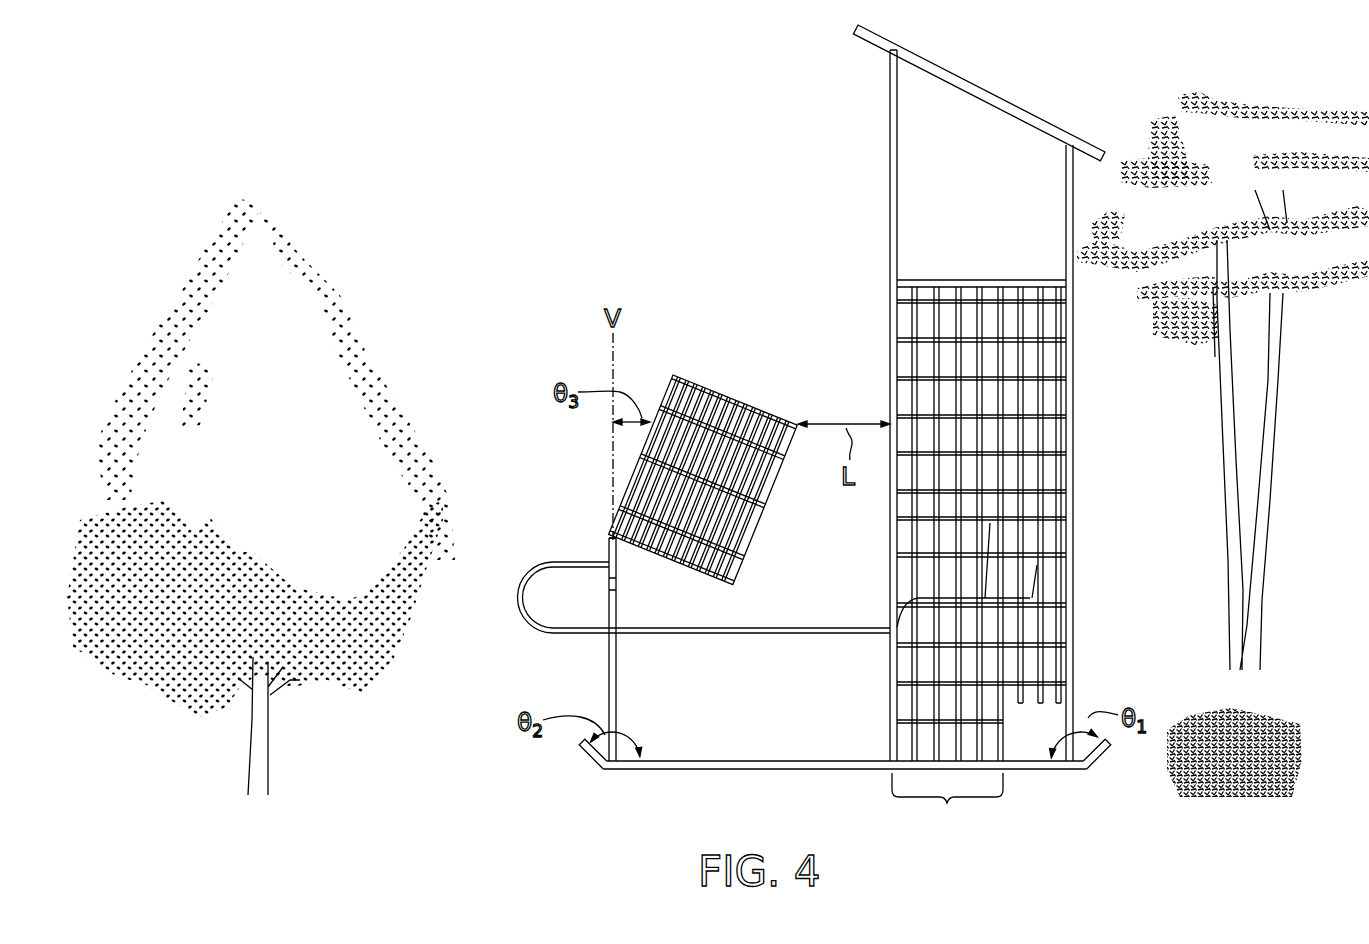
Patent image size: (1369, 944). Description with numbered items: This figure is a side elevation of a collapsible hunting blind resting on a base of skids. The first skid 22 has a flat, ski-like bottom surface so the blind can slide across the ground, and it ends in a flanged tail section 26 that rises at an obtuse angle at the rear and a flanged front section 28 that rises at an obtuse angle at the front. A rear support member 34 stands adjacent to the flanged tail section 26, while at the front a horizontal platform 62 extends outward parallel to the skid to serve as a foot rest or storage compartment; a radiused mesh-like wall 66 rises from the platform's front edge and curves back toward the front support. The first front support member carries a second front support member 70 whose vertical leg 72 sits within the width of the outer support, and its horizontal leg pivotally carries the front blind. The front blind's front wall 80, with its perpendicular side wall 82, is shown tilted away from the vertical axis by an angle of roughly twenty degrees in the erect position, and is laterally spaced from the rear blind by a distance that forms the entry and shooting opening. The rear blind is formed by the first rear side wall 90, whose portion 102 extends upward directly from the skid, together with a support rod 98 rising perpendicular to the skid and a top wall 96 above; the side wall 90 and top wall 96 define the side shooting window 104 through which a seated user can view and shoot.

The first skid 22 is at (693, 772).
The flanged tail section 26 is at (1088, 757).
The flanged front section 28 is at (585, 758).
The rear support member 34 is at (608, 674).
The horizontal platform 62 is at (577, 633).
The mesh-like wall 66 is at (520, 608).
The second front support member 70 is at (598, 540).
The vertical leg 72 is at (615, 583).
The front wall 80 is at (658, 392).
The side wall 82 is at (746, 405).
The first rear side wall 90 is at (1062, 453).
The top wall 96 is at (995, 100).
The support rod 98 is at (890, 257).
The portion of the rear side walls 102 is at (964, 676).
The side shooting window 104 is at (946, 160).